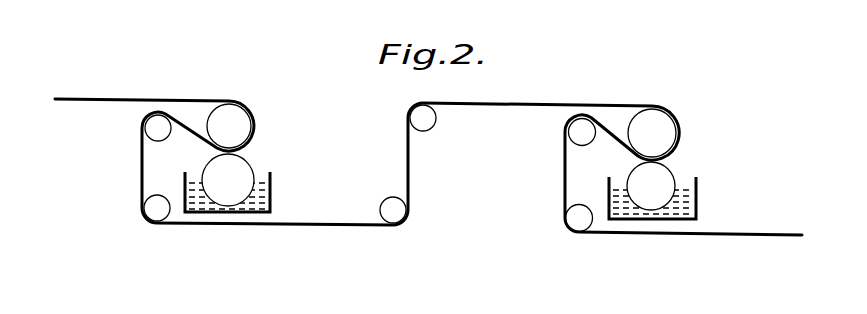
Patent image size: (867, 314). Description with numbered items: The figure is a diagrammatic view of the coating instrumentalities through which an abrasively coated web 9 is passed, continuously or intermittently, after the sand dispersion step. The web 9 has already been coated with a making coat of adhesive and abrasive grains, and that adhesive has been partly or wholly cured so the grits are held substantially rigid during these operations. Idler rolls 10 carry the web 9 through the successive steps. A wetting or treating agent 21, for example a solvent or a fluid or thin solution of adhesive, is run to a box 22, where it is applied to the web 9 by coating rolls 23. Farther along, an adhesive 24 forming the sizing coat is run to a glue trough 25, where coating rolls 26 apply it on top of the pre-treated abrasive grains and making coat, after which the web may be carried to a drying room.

The web 9 is at (101, 97).
The idler rolls 10 is at (150, 131).
The wetting or treating agent 21 is at (698, 208).
The box 22 is at (700, 192).
The coating rolls 23 is at (663, 133).
The adhesive 24 is at (272, 200).
The glue trough 25 is at (272, 184).
The coating rolls 26 is at (233, 118).